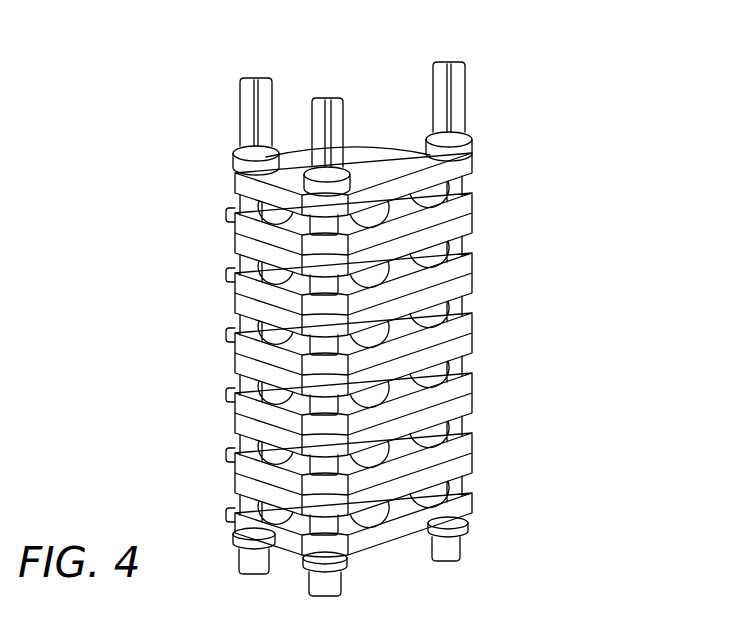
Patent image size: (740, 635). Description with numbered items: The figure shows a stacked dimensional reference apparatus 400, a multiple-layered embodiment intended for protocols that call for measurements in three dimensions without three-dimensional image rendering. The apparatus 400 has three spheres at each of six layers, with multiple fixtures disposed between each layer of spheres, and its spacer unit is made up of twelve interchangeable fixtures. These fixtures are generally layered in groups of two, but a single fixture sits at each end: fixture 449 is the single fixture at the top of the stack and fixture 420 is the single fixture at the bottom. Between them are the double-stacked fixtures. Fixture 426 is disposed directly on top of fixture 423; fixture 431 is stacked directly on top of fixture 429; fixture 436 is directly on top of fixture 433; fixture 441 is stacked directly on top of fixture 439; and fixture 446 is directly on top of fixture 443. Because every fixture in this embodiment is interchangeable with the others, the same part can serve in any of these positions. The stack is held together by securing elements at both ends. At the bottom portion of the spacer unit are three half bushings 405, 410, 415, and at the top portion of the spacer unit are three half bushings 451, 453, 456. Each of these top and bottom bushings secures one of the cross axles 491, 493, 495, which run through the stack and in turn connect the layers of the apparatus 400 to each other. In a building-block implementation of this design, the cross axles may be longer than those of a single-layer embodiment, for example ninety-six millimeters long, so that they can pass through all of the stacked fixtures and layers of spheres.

The stacked dimensional reference apparatus 400 is at (590, 160).
The half bushing 405 is at (234, 541).
The half bushing 410 is at (348, 564).
The half bushing 415 is at (472, 533).
The fixture 420 is at (479, 494).
The fixture 423 is at (319, 485).
The fixture 426 is at (238, 448).
The fixture 429 is at (355, 377).
The fixture 431 is at (479, 378).
The fixture 433 is at (319, 377).
The fixture 436 is at (238, 331).
The fixture 439 is at (355, 257).
The fixture 441 is at (479, 263).
The fixture 443 is at (319, 257).
The fixture 446 is at (238, 215).
The fixture 449 is at (479, 166).
The half bushing 451 is at (236, 152).
The half bushing 453 is at (356, 190).
The half bushing 456 is at (479, 148).
The cross axle 491 is at (256, 78).
The cross axle 493 is at (327, 98).
The cross axle 495 is at (449, 62).